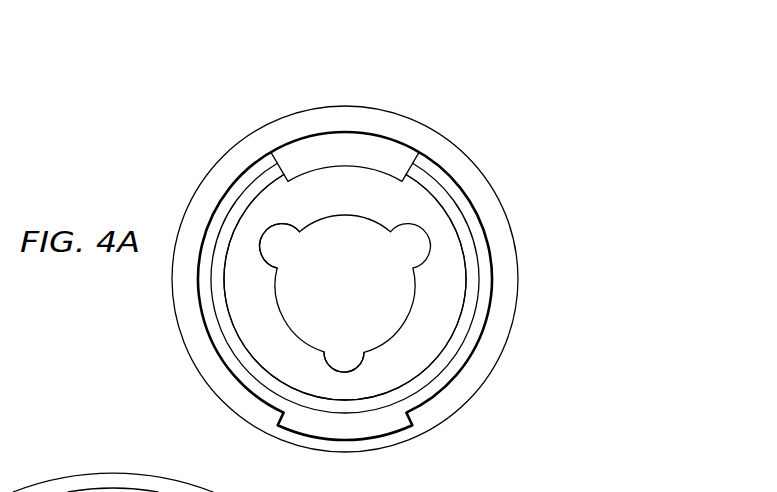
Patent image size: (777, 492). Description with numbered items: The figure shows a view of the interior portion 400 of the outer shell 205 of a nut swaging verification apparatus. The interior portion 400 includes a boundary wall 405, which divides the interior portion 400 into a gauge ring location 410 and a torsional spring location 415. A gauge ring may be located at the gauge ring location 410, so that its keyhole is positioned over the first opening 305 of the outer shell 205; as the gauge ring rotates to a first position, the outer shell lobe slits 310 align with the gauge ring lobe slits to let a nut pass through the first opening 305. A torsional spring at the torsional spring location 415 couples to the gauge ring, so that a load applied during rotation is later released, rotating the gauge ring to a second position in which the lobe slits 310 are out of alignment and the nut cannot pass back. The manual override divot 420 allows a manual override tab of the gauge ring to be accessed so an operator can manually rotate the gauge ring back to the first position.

The outer shell 205 is at (471, 114).
The first opening 305 is at (366, 311).
The outer shell lobe slits 310 is at (348, 353).
The interior portion 400 is at (268, 208).
The boundary wall 405 is at (458, 347).
The gauge ring location 410 is at (442, 267).
The torsional spring location 415 is at (487, 298).
The manual override divot 420 is at (342, 147).